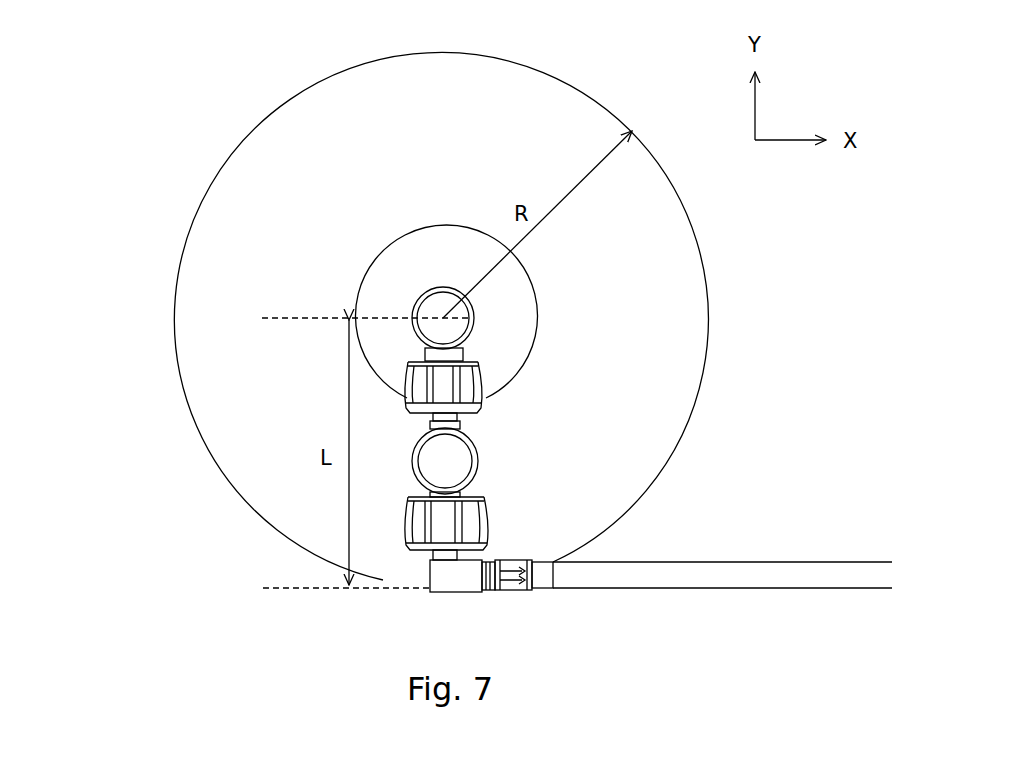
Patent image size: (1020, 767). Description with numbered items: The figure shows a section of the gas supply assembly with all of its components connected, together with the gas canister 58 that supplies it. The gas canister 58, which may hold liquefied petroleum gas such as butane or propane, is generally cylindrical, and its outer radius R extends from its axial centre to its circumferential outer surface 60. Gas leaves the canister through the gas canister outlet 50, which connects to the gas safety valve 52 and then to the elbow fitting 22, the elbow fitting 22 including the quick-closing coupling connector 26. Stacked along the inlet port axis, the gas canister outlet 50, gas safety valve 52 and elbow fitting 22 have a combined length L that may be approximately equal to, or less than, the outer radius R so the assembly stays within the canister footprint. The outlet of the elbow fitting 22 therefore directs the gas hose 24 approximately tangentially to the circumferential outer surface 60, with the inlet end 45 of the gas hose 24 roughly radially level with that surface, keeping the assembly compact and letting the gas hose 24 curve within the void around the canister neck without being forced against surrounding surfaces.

The circumferential outer surface 60 is at (280, 107).
The gas canister 58 is at (222, 255).
The gas canister outlet 50 is at (437, 300).
The gas safety valve 52 is at (478, 460).
The QCC-1 connector 26 is at (483, 505).
The elbow fitting 22 is at (448, 577).
The inlet end 45 is at (512, 586).
The gas hose 24 is at (742, 575).